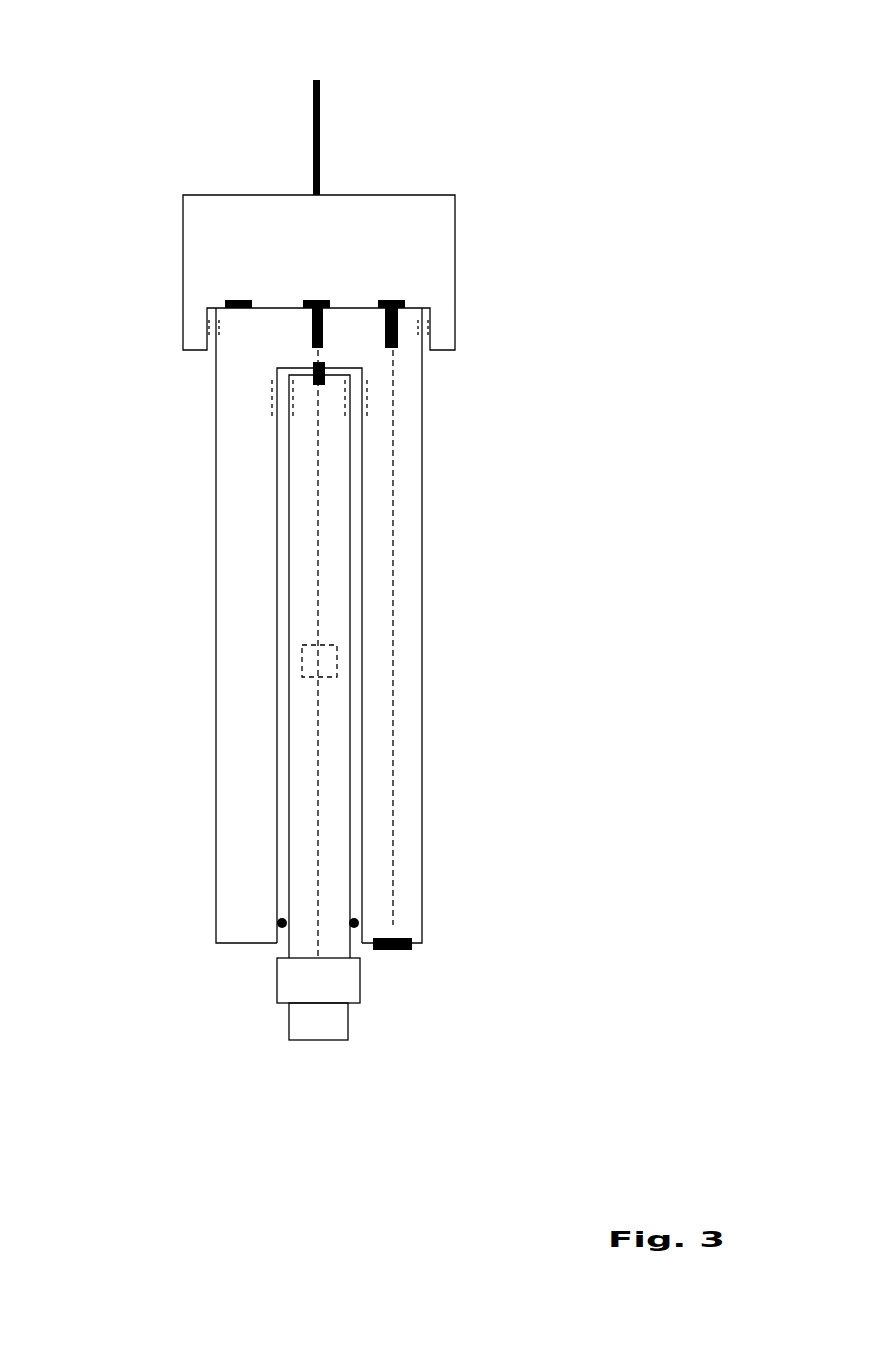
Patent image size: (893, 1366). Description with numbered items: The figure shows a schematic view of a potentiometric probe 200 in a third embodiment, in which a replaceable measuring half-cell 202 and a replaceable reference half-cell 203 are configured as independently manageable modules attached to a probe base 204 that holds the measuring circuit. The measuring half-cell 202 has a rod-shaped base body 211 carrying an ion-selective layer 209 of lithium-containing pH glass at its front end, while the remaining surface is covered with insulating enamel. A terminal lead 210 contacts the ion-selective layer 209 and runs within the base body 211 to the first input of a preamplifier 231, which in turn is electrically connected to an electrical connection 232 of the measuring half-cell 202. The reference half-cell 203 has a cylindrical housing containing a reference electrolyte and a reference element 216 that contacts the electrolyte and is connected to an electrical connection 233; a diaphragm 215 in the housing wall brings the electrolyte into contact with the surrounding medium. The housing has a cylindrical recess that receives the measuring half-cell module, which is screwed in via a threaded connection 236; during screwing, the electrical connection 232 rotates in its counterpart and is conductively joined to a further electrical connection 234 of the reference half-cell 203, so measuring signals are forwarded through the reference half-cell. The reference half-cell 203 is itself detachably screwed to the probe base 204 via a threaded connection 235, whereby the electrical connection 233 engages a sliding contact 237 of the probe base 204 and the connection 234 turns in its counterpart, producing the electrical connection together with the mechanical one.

The potentiometric probe 200 is at (520, 104).
The measuring half-cell 202 is at (218, 1035).
The reference half-cell 203 is at (430, 585).
The probe base 204 is at (433, 226).
The ion-selective layer 209 is at (340, 982).
The terminal lead 210 is at (318, 880).
The base body 211 is at (337, 772).
The diaphragm 215 is at (412, 942).
The reference element 216 is at (406, 506).
The preamplifier 231 is at (337, 655).
The electrical connection 232 is at (322, 378).
The electrical connection 233 is at (400, 320).
The electrical connection 234 is at (312, 342).
The threaded connection 235 is at (205, 330).
The threaded connection 236 is at (362, 408).
The sliding contact 237 is at (398, 302).